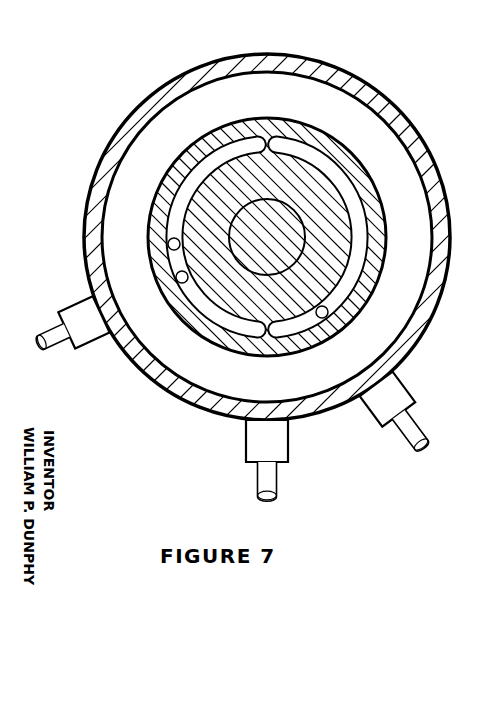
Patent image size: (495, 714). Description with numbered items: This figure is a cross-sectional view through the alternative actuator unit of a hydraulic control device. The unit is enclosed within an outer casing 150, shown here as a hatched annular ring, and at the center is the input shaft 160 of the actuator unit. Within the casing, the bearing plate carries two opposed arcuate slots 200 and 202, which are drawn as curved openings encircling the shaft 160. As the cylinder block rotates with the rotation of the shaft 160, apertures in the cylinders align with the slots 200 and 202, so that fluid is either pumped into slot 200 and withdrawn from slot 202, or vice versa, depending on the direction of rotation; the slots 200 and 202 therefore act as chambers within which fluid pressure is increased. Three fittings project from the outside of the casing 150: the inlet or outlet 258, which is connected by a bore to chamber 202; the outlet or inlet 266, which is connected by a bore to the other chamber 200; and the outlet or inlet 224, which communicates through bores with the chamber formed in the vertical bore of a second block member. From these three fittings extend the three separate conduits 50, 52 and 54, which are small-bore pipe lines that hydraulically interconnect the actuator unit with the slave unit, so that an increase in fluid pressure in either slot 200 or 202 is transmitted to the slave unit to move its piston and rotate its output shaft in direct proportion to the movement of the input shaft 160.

The outer casing 150 is at (388, 93).
The slot 200 is at (345, 185).
The slot 202 is at (218, 157).
The shaft 160 is at (281, 250).
The inlet or outlet 258 is at (77, 349).
The conduit 50 is at (60, 347).
The outlet or inlet 266 is at (417, 392).
The conduit 52 is at (422, 425).
The outlet or inlet 224 is at (288, 449).
The conduit 54 is at (277, 482).